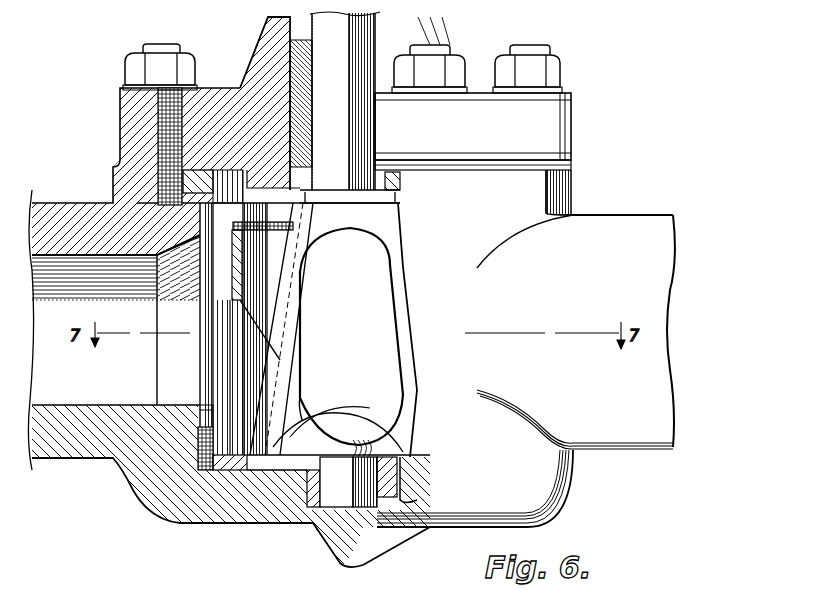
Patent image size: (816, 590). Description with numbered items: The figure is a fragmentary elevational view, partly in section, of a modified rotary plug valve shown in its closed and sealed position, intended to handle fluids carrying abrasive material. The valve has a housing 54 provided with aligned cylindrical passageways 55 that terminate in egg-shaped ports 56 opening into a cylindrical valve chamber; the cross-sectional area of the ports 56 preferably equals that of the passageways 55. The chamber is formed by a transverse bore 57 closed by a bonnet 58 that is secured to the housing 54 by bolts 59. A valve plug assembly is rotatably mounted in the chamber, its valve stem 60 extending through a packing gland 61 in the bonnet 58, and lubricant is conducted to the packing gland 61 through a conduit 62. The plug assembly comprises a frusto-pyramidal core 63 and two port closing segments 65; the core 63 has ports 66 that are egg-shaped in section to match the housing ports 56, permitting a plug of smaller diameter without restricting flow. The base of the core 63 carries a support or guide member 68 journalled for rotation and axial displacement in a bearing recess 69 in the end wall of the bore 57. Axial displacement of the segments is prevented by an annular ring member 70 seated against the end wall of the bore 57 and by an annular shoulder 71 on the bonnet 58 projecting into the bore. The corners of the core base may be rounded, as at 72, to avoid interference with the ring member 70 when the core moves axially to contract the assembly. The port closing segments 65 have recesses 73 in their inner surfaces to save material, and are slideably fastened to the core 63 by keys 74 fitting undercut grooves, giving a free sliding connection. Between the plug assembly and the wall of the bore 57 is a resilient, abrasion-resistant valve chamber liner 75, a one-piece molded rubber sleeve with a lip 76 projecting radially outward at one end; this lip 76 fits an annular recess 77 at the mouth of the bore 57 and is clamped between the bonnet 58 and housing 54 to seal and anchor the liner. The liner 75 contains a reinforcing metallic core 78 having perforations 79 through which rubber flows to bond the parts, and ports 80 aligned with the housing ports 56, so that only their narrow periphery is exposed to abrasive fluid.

The housing 54 is at (573, 185).
The cylindrical passageways 55 is at (100, 410).
The egg-shaped ports 56 is at (205, 425).
The transverse bore 57 is at (240, 250).
The bonnet 58 is at (572, 130).
The bolts 59 is at (562, 77).
The valve stem 60 is at (365, 142).
The packing gland 61 is at (296, 128).
The conduit 62 is at (275, 108).
The frusto-pyramidal core 63 is at (377, 228).
The port closing segments 65 is at (227, 367).
The ports 66 is at (300, 400).
The support or guide member 68 is at (375, 493).
The bearing recess 69 is at (320, 507).
The annular ring member 70 is at (220, 470).
The annular shoulder 71 is at (262, 212).
The rounded corners 72 is at (280, 447).
The recesses 73 is at (243, 295).
The keys 74 is at (273, 317).
The valve chamber liner 75 is at (215, 450).
The lip or rim 76 is at (160, 138).
The annular recess 77 is at (190, 182).
The reinforcing metallic core 78 is at (195, 215).
The perforations 79 is at (200, 447).
The ports 80 is at (200, 412).